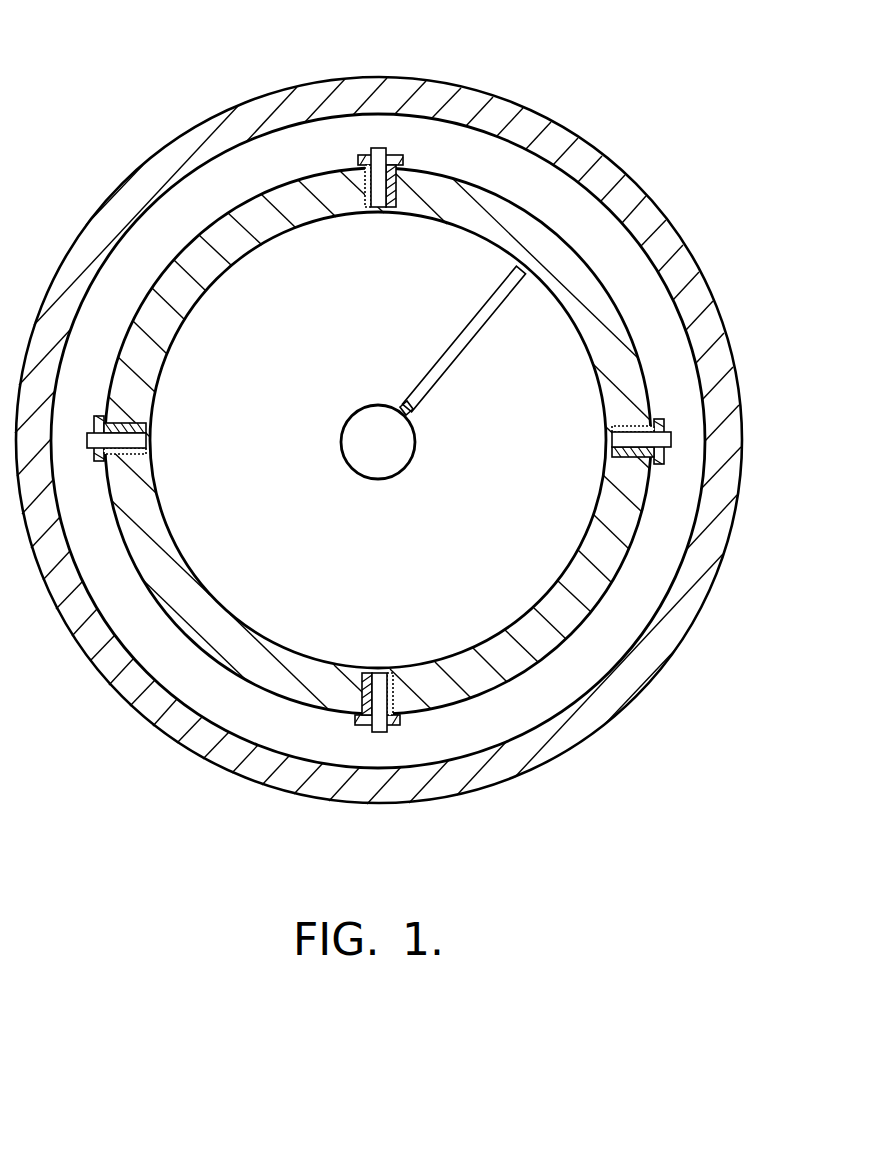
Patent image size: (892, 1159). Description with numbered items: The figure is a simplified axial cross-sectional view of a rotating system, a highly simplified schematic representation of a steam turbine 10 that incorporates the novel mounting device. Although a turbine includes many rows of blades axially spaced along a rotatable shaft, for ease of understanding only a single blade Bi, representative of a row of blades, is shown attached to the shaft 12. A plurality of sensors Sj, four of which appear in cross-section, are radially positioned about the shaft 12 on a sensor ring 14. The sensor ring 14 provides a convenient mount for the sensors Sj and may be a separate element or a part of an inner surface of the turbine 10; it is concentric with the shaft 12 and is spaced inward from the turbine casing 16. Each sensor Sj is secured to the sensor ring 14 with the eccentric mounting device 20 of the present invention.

The steam turbine 10 is at (500, 70).
The turbine casing 16 is at (566, 128).
The sensor ring 14 is at (538, 223).
The shaft 12 is at (415, 447).
The eccentric mounting device 20 is at (389, 210).
The sensor Sj is at (373, 210).
The blade Bi is at (464, 347).